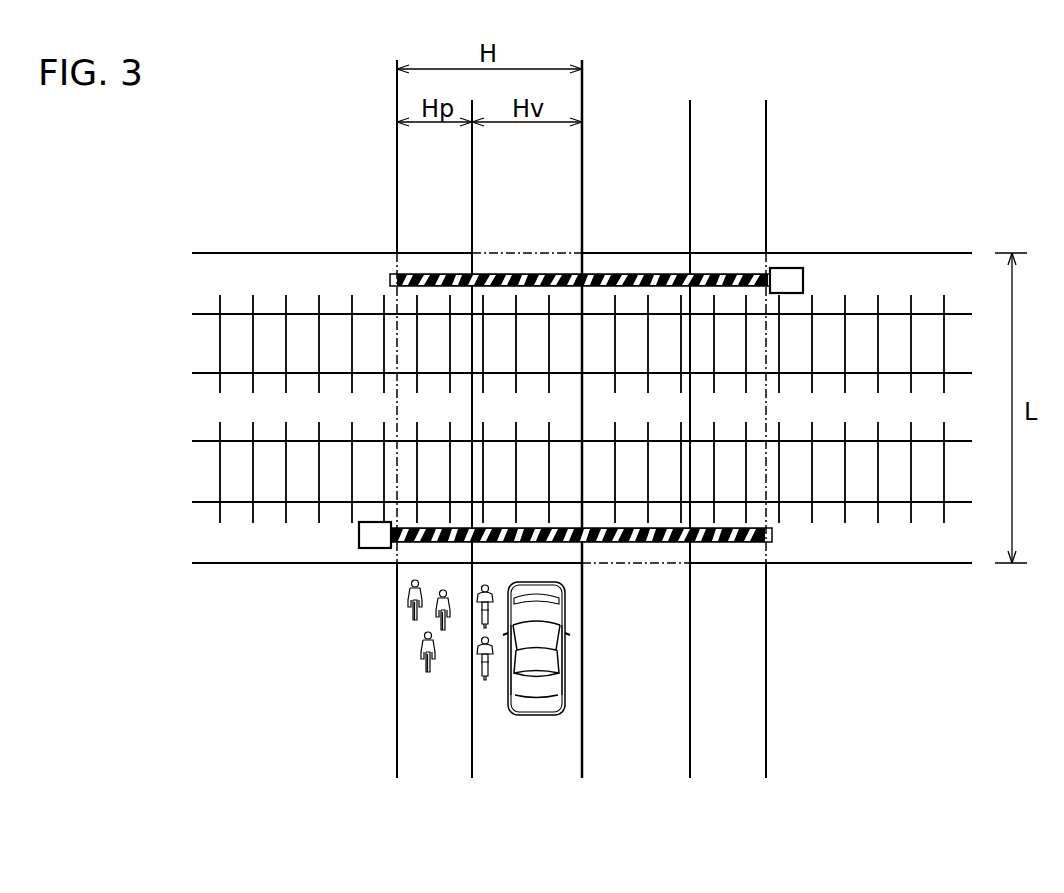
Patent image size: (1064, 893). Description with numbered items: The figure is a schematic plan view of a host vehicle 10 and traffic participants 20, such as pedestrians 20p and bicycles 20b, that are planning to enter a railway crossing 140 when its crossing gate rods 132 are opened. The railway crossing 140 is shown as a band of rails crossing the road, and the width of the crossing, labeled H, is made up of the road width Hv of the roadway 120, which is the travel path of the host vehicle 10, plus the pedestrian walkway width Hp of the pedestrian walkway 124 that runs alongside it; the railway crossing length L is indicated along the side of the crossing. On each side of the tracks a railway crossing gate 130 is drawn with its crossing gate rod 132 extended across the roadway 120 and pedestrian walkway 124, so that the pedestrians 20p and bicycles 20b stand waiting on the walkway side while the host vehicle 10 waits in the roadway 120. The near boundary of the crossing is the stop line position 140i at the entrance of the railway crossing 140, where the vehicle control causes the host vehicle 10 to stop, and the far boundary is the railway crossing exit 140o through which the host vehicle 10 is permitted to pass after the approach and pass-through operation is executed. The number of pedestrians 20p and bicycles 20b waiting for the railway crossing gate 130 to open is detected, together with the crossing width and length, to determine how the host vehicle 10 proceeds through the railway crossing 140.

The host vehicle 10 is at (537, 715).
The traffic participants 20 is at (400, 660).
The pedestrians 20p is at (425, 650).
The bicycles 20b is at (480, 672).
The roadway 120 is at (562, 160).
The pedestrian walkway 124 is at (427, 160).
The railway crossing gate 130 is at (783, 268).
The crossing gate rods 132 is at (530, 272).
The railway crossing 140 is at (797, 598).
The railway crossing exit 140o is at (557, 253).
The stop line position 140i is at (568, 565).